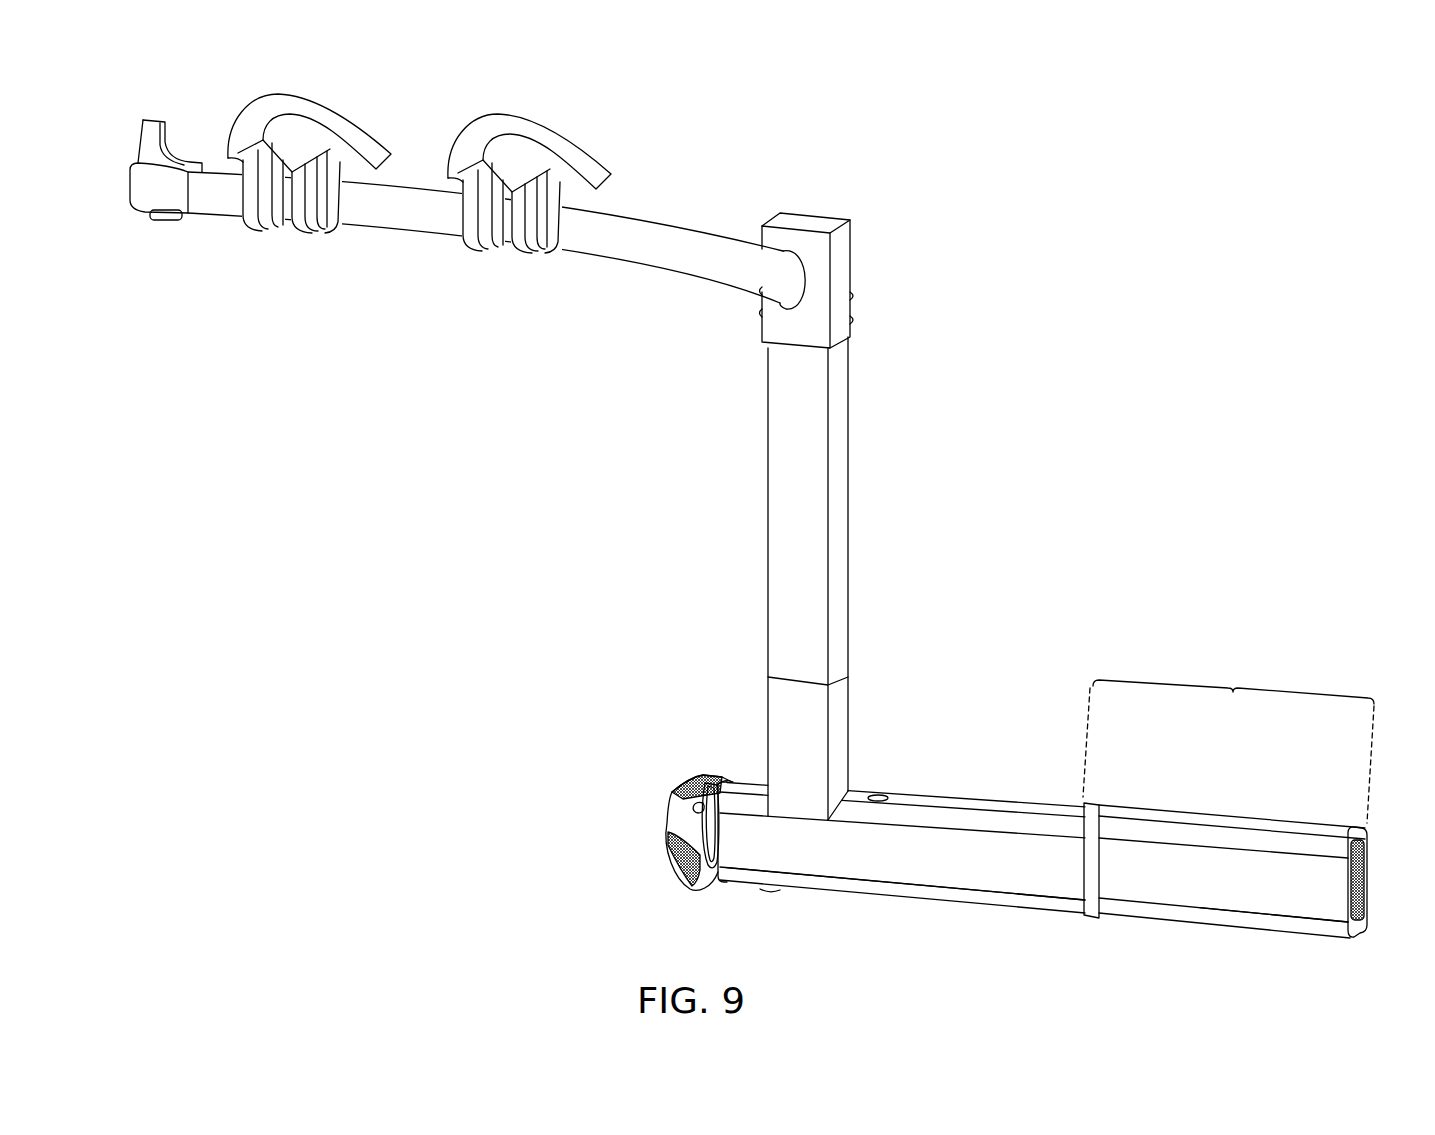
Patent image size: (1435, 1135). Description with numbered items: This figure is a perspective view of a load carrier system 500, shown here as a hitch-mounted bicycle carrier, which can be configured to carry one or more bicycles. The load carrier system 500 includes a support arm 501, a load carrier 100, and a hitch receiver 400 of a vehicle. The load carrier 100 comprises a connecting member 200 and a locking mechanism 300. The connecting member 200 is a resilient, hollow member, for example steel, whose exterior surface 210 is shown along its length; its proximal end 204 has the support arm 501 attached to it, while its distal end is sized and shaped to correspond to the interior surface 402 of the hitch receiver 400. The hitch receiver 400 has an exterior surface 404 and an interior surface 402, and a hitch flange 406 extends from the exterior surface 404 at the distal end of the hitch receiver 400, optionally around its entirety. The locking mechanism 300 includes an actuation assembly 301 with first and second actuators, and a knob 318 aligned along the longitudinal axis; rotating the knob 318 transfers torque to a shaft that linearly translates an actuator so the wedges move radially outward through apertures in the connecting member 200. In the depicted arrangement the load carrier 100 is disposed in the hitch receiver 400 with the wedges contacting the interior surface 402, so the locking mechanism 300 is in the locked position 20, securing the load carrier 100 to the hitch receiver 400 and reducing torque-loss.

The locked position 20 is at (1377, 436).
The load carrier 100 is at (1054, 590).
The connecting member 200 is at (1000, 788).
The proximal end 204 is at (726, 786).
The exterior surface 210 is at (766, 860).
The locking mechanism 300 is at (1213, 794).
The actuation assembly 301 is at (1233, 690).
The knob 318 is at (652, 808).
The hitch receiver 400 is at (1309, 825).
The interior surface 402 is at (1370, 866).
The exterior surface 404 is at (1290, 898).
The hitch flange 406 is at (1103, 803).
The load carrier system 500 is at (1111, 146).
The support arm 501 is at (731, 516).